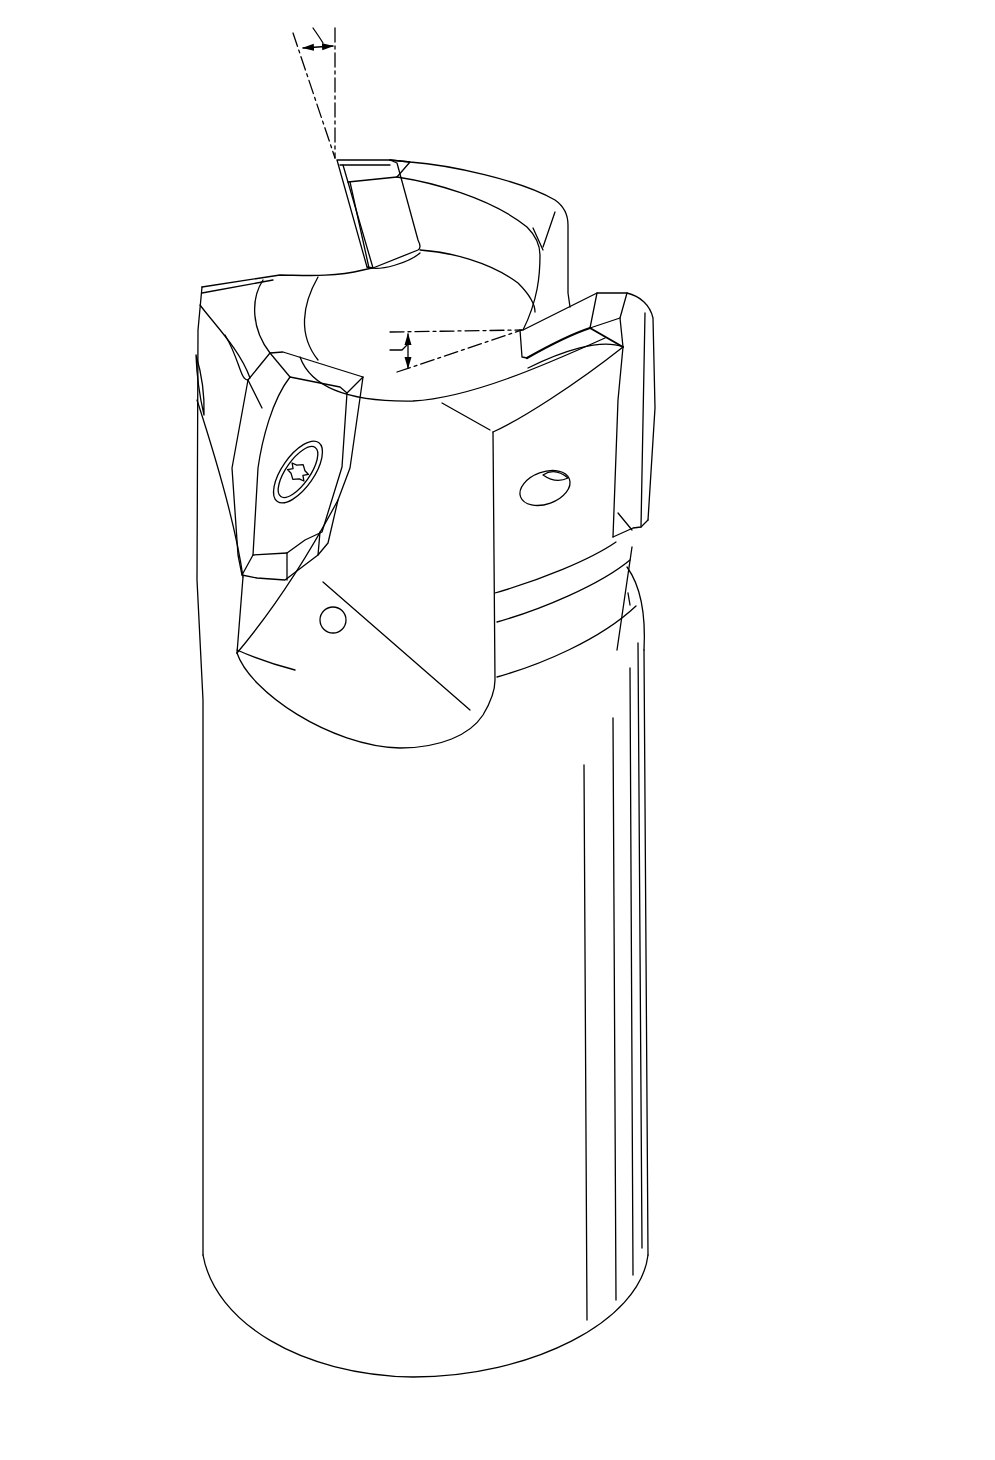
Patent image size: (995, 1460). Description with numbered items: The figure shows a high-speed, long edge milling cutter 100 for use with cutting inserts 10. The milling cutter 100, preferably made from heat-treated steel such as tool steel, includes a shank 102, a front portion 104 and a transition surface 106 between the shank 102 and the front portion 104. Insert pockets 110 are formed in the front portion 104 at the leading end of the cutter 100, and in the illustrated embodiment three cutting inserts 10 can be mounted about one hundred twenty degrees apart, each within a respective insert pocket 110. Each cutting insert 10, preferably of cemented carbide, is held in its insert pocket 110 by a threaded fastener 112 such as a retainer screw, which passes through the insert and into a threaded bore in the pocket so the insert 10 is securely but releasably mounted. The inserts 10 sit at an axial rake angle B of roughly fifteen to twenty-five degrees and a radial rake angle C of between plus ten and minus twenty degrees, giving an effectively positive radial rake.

The milling cutter 100 is at (724, 168).
The shank 102 is at (232, 1072).
The front portion 104 is at (567, 627).
The transition surface 106 is at (237, 650).
The cutting insert 10 is at (327, 208).
The insert pocket 110 is at (413, 208).
The threaded fastener 112 is at (290, 490).